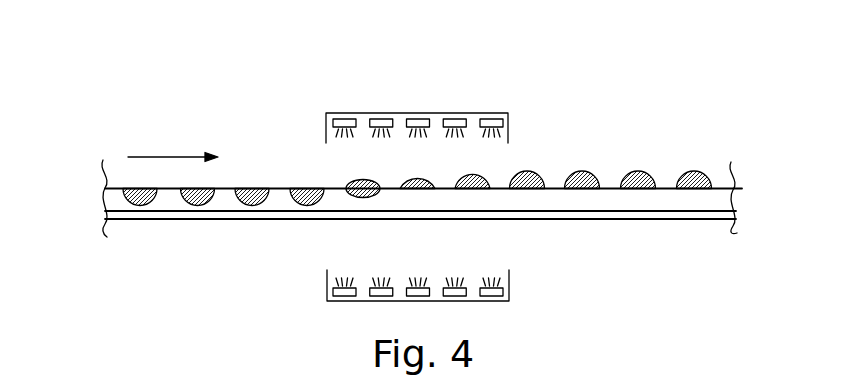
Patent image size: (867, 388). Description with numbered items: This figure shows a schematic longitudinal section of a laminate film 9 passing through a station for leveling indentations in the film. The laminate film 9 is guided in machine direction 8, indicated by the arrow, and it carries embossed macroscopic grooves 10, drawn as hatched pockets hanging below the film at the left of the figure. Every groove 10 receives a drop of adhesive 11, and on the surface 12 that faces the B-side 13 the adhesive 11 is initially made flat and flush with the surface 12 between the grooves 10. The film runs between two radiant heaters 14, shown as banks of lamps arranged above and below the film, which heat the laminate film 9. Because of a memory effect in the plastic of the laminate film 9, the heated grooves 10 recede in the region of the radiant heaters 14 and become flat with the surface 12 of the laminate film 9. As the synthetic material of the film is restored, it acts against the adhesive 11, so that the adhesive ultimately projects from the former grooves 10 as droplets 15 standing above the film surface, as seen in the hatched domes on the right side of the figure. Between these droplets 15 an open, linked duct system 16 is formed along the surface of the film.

The machine direction 8 is at (150, 157).
The laminate film 9 is at (167, 198).
The groove 10 is at (133, 188).
The adhesive 11 is at (198, 197).
The surface 12 is at (279, 185).
The B-side 13 is at (580, 62).
The radiant heater 14 is at (389, 107).
The droplet 15 is at (589, 191).
The open, linked duct system 16 is at (643, 168).